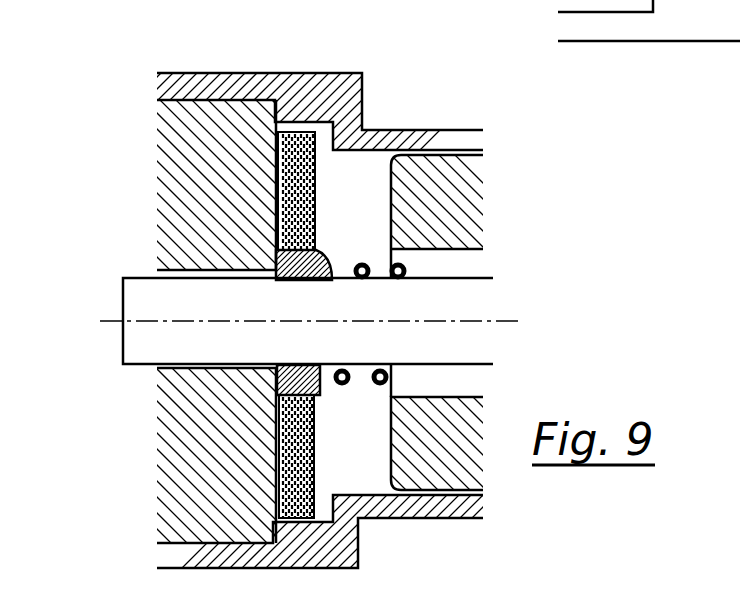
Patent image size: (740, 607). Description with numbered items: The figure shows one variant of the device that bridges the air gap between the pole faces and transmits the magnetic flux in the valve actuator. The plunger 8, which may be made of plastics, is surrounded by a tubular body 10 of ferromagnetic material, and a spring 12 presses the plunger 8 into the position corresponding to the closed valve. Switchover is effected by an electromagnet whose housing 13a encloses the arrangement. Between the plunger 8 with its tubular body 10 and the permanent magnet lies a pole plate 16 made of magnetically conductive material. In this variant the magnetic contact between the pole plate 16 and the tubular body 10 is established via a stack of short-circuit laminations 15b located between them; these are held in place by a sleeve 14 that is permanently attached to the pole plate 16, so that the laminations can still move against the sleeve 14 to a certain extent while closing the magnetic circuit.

The plunger 8 is at (476, 303).
The tubular body 10 is at (448, 206).
The spring 12 is at (362, 264).
The housing 13a is at (343, 90).
The sleeve 14 is at (312, 387).
The short-circuit laminations 15b is at (277, 182).
The pole plate 16 is at (200, 468).